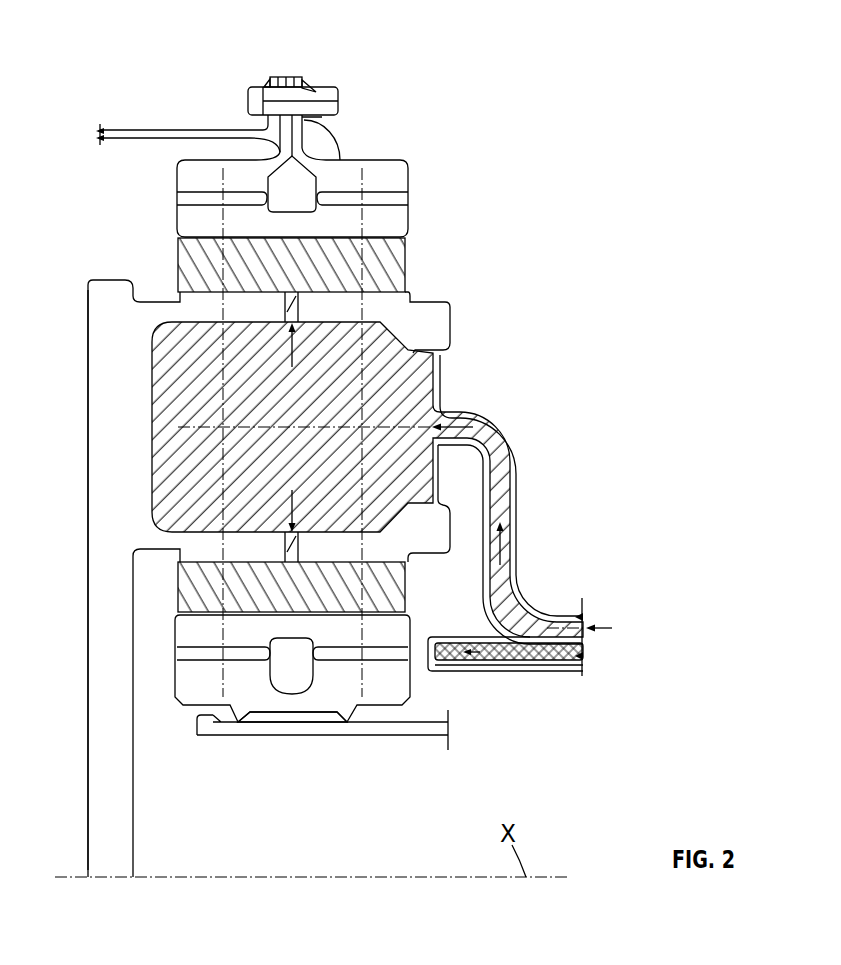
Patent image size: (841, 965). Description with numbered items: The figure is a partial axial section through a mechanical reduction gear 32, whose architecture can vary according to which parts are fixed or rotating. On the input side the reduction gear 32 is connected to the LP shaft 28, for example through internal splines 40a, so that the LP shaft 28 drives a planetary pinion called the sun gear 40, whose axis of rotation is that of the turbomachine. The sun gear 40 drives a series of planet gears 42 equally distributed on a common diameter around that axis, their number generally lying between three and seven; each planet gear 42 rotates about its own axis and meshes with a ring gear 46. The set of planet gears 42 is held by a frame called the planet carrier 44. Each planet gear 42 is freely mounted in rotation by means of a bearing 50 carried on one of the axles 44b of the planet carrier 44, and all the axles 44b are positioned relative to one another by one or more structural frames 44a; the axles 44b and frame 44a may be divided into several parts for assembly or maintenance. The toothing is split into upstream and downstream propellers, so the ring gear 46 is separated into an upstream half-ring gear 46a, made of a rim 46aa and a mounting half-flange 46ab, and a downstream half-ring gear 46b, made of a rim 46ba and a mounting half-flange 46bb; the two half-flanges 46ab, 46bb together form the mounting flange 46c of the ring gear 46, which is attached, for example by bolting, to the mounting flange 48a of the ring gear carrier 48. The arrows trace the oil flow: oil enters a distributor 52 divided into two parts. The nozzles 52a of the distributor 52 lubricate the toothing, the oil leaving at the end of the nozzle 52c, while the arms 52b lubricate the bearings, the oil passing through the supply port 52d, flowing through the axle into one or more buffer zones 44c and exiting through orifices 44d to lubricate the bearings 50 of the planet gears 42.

The LP shaft 28 is at (415, 730).
The reduction gear 32 is at (545, 244).
The sun gear 40 is at (177, 672).
The internal splines 40a is at (270, 713).
The planet gears 42 is at (177, 638).
The planet carrier 44 is at (434, 304).
The structural frame 44a is at (97, 378).
The axles 44b is at (440, 533).
The buffer zone 44c is at (250, 467).
The orifices 44d is at (298, 303).
The ring gear 46 is at (404, 157).
The upstream half-ring gear 46a is at (193, 173).
The rim 46aa is at (200, 168).
The mounting half-flange 46ab is at (283, 77).
The downstream half-ring gear 46b is at (393, 182).
The rim 46ba is at (348, 170).
The mounting half-flange 46bb is at (303, 78).
The mounting flange 46c is at (365, 25).
The ring gear carrier 48 is at (138, 128).
The mounting flange 48a is at (272, 80).
The bearing 50 is at (400, 265).
The distributor 52 is at (581, 573).
The nozzle 52a is at (515, 664).
The arm 52b is at (513, 482).
The end of the nozzle 52c is at (430, 673).
The supply port 52d is at (438, 367).